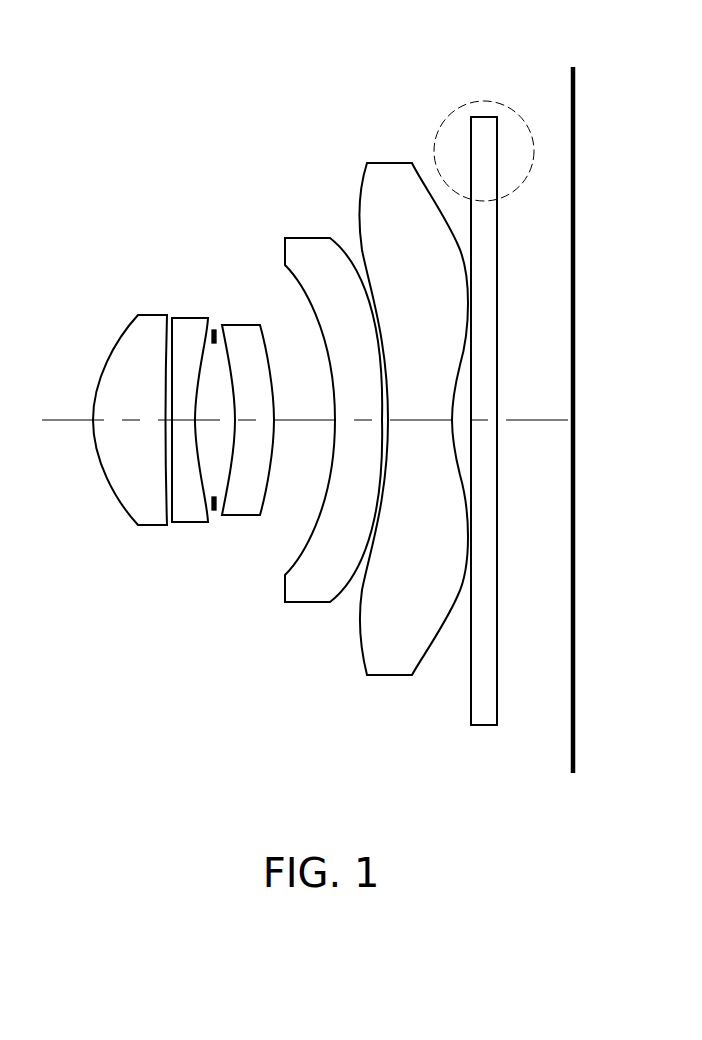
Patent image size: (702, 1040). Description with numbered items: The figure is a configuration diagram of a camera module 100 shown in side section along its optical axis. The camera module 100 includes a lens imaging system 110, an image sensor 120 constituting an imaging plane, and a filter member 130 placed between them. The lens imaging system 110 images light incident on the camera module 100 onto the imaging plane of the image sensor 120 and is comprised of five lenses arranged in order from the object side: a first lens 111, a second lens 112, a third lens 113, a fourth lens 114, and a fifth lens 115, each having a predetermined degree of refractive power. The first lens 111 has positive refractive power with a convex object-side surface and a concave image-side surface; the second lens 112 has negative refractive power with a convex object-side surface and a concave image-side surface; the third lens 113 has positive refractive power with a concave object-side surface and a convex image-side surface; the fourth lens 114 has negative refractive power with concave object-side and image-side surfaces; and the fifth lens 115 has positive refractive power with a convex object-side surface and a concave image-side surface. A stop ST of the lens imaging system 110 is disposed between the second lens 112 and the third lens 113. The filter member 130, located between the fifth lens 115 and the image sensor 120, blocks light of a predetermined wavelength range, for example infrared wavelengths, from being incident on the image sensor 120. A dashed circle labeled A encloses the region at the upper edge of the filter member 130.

The camera module 100 is at (294, 192).
The lens imaging system 110 is at (412, 748).
The first lens 111 is at (148, 528).
The second lens 112 is at (186, 524).
The third lens 113 is at (236, 517).
The fourth lens 114 is at (313, 604).
The fifth lens 115 is at (385, 677).
The image sensor 120 is at (570, 745).
The filter member 130 is at (484, 727).
The stop ST is at (215, 328).
The region A is at (458, 108).